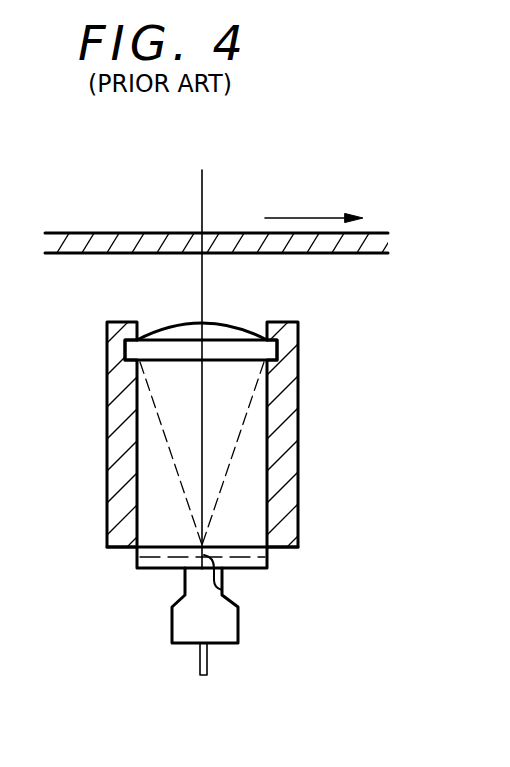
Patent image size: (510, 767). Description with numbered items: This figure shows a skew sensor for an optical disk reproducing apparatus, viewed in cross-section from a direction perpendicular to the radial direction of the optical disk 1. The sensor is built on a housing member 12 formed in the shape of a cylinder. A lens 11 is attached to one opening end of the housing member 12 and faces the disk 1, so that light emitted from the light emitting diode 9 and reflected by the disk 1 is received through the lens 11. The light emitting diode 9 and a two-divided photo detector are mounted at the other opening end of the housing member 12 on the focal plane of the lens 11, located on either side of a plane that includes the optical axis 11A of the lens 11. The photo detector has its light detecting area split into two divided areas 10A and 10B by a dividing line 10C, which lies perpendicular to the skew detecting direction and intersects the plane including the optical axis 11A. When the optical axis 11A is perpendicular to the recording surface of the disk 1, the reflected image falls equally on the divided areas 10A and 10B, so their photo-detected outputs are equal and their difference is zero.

The optical disk 1 is at (76, 255).
The optical axis 11A is at (202, 292).
The lens 11 is at (234, 340).
The housing member 12 is at (298, 480).
The divided area 10A is at (252, 566).
The divided area 10B is at (170, 566).
The dividing line 10C is at (222, 590).
The light emitting diode 9 is at (172, 625).